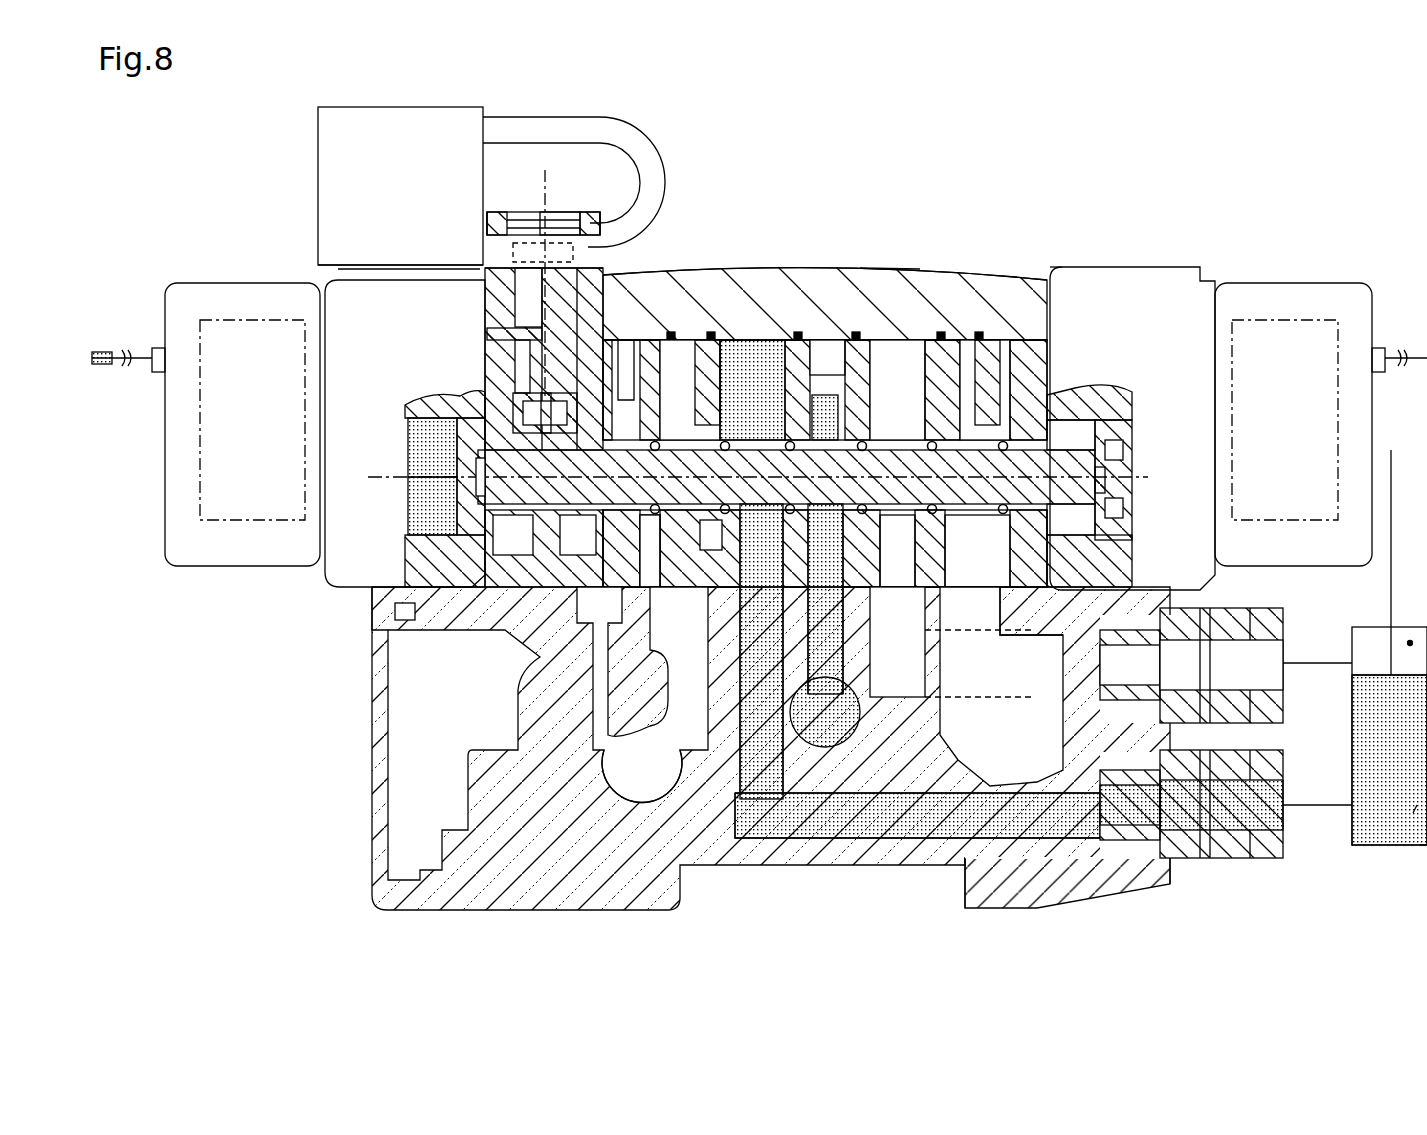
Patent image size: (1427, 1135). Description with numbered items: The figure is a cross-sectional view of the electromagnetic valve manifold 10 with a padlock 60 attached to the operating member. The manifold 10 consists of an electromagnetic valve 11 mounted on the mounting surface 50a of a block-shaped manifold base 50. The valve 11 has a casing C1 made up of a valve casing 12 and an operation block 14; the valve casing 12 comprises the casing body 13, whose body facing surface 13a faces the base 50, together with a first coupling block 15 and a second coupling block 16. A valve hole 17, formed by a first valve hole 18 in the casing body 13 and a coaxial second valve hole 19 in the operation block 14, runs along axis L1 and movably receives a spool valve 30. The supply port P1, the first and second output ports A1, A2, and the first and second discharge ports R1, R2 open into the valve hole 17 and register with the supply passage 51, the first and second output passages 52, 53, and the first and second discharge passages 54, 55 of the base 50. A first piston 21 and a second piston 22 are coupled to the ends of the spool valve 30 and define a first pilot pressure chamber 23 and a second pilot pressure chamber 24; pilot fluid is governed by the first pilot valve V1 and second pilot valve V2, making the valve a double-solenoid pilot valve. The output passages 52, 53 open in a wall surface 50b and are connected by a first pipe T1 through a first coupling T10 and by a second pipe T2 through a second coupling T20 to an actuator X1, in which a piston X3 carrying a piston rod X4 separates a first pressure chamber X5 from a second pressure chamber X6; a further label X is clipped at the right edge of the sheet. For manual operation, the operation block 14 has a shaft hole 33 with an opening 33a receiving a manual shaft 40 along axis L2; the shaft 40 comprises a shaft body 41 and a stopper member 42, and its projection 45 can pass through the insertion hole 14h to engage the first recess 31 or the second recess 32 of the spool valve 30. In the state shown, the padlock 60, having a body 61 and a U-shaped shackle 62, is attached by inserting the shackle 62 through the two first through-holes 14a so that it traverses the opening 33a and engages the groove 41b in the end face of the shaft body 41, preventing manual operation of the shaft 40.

The electromagnetic valve manifold 10 is at (1361, 196).
The electromagnetic valve 11 is at (740, 275).
The valve casing 12 is at (823, 268).
The casing body 13 is at (820, 340).
The body facing surface 13a is at (612, 594).
The operation block 14 is at (497, 212).
The first through-hole 14a is at (487, 236).
The insertion hole 14h is at (590, 466).
The first coupling block 15 is at (412, 280).
The second coupling block 16 is at (1115, 267).
The valve hole 17 is at (645, 527).
The first valve hole 18 is at (725, 540).
The second valve hole 19 is at (527, 508).
The first piston 21 is at (443, 440).
The second piston 22 is at (1113, 442).
The first pilot pressure chamber 23 is at (432, 507).
The second pilot pressure chamber 24 is at (1123, 490).
The spool valve 30 is at (897, 495).
The first recess 31 is at (547, 537).
The second recess 32 is at (580, 508).
The shaft hole 33 is at (600, 400).
The opening 33a is at (590, 212).
The manual shaft 40 is at (563, 300).
The shaft body 41 is at (487, 297).
The groove 41b is at (590, 270).
The stopper member 42 is at (487, 337).
The projection 45 is at (510, 395).
The manifold base 50 is at (372, 676).
The mounting surface 50a is at (380, 590).
The wall surface 50b is at (1177, 870).
The supply passage 51 is at (832, 723).
The first output passage 52 is at (732, 822).
The second output passage 53 is at (893, 693).
The first discharge passage 54 is at (617, 772).
The second discharge passage 55 is at (1040, 760).
The padlock 60 is at (350, 107).
The body 61 is at (424, 107).
The shackle 62 is at (558, 243).
The axis L1 is at (887, 473).
The axis L2 is at (542, 180).
The first pilot valve V1 is at (248, 320).
The second pilot valve V2 is at (1280, 320).
The casing C1 is at (887, 268).
The first discharge port R1 is at (686, 580).
The second discharge port R2 is at (957, 585).
The first output port A1 is at (752, 585).
The second output port A2 is at (887, 585).
The supply port P1 is at (822, 585).
The first pipe T1 is at (1317, 807).
The second pipe T2 is at (1318, 663).
The first coupling T10 is at (1270, 860).
The second coupling T20 is at (1225, 608).
The fluid device X is at (1420, 878).
The actuator X1 is at (1360, 850).
The piston X3 is at (1402, 677).
The piston rod X4 is at (1397, 477).
The first pressure chamber X5 is at (1413, 813).
The second pressure chamber X6 is at (1410, 640).